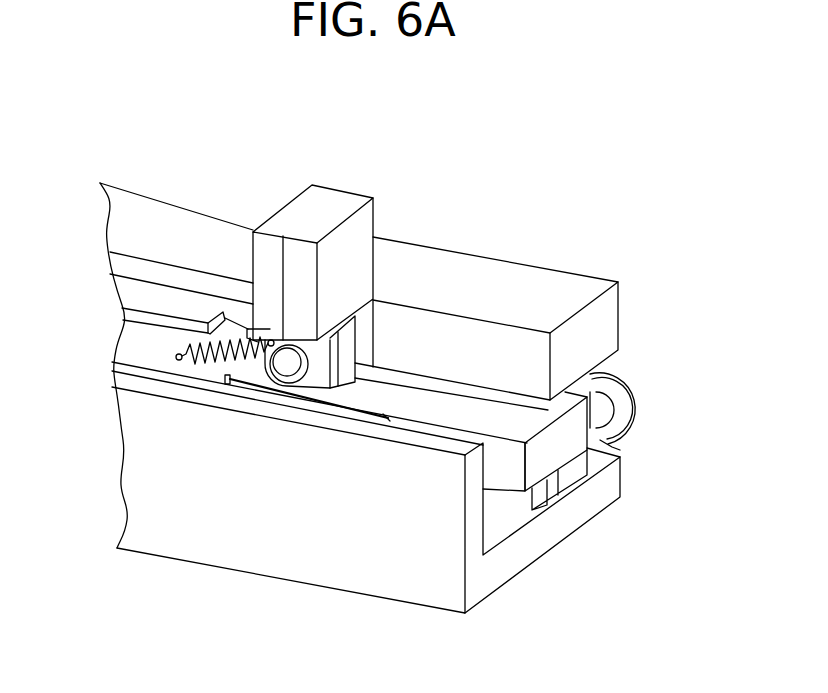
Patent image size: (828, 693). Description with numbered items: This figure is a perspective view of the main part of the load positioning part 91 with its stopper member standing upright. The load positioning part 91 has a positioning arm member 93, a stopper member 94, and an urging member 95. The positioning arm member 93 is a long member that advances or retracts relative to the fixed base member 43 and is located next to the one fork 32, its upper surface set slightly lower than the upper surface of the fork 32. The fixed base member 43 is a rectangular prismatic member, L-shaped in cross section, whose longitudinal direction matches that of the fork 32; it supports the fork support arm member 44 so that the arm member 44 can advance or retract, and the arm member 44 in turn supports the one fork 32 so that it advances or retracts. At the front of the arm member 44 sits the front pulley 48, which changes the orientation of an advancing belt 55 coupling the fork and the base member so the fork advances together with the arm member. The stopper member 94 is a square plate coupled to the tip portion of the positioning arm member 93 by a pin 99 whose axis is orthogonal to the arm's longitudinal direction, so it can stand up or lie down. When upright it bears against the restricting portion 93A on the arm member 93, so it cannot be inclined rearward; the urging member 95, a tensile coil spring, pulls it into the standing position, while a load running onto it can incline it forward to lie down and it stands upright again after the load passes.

The load positioning part 91 is at (306, 351).
The positioning arm member 93 is at (172, 295).
The restricting portion 93A is at (250, 332).
The stopper member 94 is at (377, 224).
The urging member 95 is at (212, 358).
The pin 99 is at (283, 370).
The fork 32 is at (508, 292).
The fixed base member 43 is at (297, 540).
The fork support arm member 44 is at (555, 446).
The advancing belt 55 is at (620, 375).
The front pulley 48 is at (612, 437).